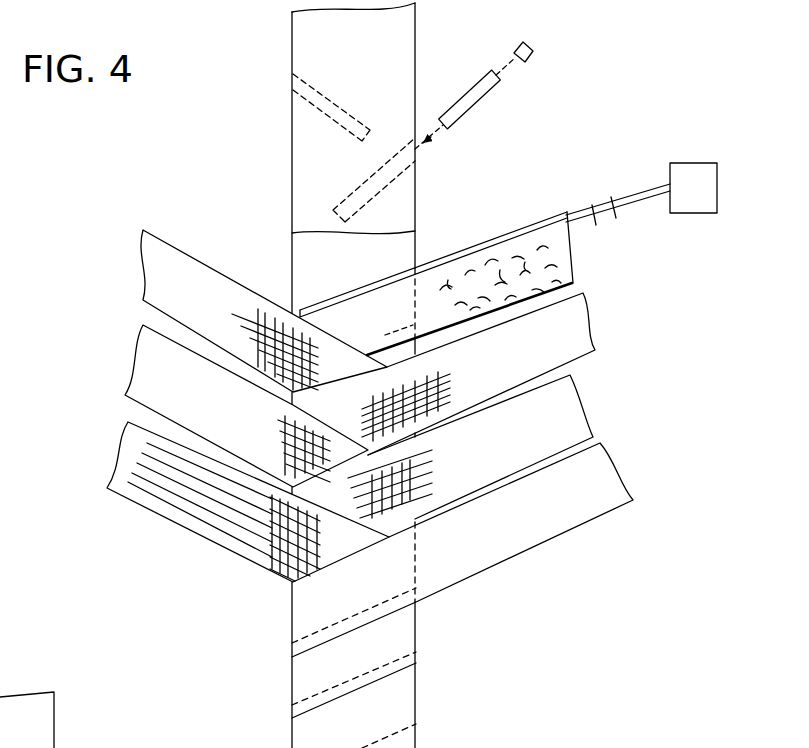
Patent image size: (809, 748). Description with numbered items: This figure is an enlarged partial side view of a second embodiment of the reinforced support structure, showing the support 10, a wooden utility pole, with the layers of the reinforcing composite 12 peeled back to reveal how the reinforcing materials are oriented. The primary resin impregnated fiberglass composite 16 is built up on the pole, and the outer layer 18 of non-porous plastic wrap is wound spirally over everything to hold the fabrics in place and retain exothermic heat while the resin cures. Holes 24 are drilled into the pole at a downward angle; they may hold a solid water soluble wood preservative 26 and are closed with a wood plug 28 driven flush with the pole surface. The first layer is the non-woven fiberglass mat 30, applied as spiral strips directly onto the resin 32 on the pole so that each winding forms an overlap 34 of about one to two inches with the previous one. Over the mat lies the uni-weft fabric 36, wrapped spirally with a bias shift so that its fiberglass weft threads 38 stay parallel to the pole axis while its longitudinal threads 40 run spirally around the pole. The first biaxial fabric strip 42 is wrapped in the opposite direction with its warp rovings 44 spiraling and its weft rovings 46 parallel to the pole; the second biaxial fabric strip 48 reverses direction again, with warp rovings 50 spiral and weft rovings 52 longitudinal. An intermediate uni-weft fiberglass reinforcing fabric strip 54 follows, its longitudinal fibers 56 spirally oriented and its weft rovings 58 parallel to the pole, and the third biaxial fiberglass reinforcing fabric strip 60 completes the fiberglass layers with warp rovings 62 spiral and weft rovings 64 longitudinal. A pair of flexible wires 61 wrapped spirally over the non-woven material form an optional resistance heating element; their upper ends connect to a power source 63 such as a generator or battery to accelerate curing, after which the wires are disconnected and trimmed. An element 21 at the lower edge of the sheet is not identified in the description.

The support 10 is at (408, 34).
The reinforcing composite 12 is at (444, 652).
The primary resin impregnated fiberglass composite 16 is at (607, 315).
The outer layer of non-porous plastic wrap 18 is at (540, 549).
The housing 21 is at (66, 720).
The holes 24 is at (312, 106).
The solid water soluble wood preservative 26 is at (470, 110).
The wood plug 28 is at (532, 60).
The non-woven fiberglass mat 30 is at (503, 232).
The resin 32 is at (390, 256).
The overlap 34 is at (380, 333).
The uni-weft fabric 36 is at (220, 268).
The fiberglass weft threads 38 is at (268, 312).
The longitudinal threads 40 is at (241, 309).
The first biaxial fabric strip 42 is at (530, 379).
The warp rovings 44 is at (382, 425).
The weft rovings 46 is at (438, 374).
The second biaxial fabric strip 48 is at (170, 418).
The warp rovings 50 is at (283, 445).
The weft rovings 52 is at (283, 420).
The uni-weft fiberglass reinforcing fabric strip 54 is at (558, 456).
The longitudinal fibers 56 is at (427, 475).
The weft rovings 58 is at (404, 456).
The third biaxial fiberglass reinforcing fabric strip 60 is at (172, 522).
The flexible wires 61 is at (575, 212).
The warp rovings 62 is at (238, 542).
The power source 63 is at (706, 161).
The weft rovings 64 is at (266, 565).